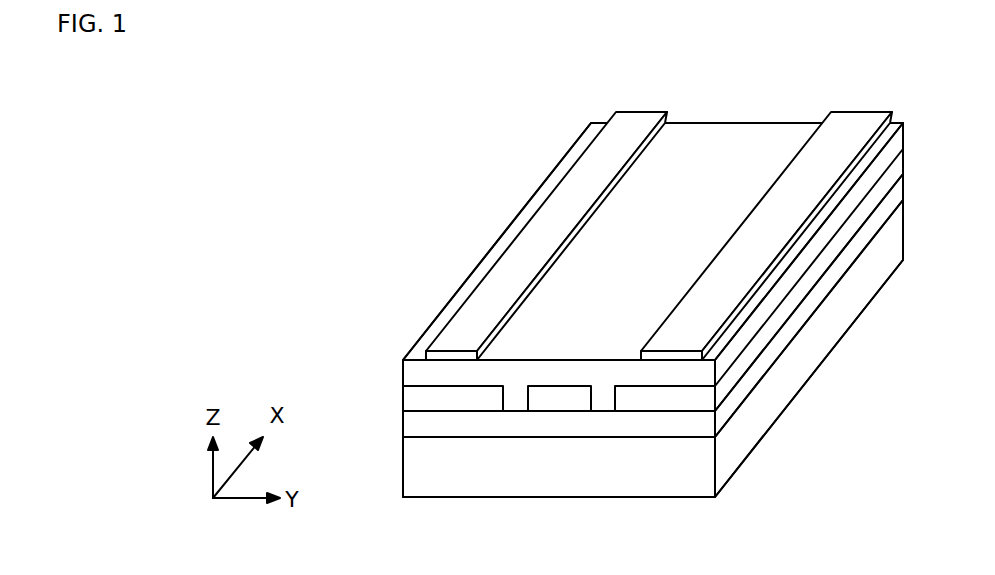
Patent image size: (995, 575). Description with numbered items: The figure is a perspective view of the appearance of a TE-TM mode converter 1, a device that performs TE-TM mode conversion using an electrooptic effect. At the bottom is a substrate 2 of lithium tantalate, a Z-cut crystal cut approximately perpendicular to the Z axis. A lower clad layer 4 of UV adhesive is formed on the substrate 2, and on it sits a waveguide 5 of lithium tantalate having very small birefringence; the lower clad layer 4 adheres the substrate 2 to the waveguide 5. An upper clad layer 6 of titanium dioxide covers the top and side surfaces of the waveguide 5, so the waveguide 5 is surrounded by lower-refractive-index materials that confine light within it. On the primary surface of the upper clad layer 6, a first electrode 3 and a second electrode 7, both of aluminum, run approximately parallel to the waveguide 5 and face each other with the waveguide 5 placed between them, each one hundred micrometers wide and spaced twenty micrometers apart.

The TE-TM mode converter 1 is at (372, 97).
The substrate 2 is at (473, 485).
The first electrode 3 is at (587, 157).
The lower clad layer 4 is at (550, 418).
The waveguide 5 is at (557, 398).
The upper clad layer 6 is at (725, 132).
The second electrode 7 is at (840, 137).